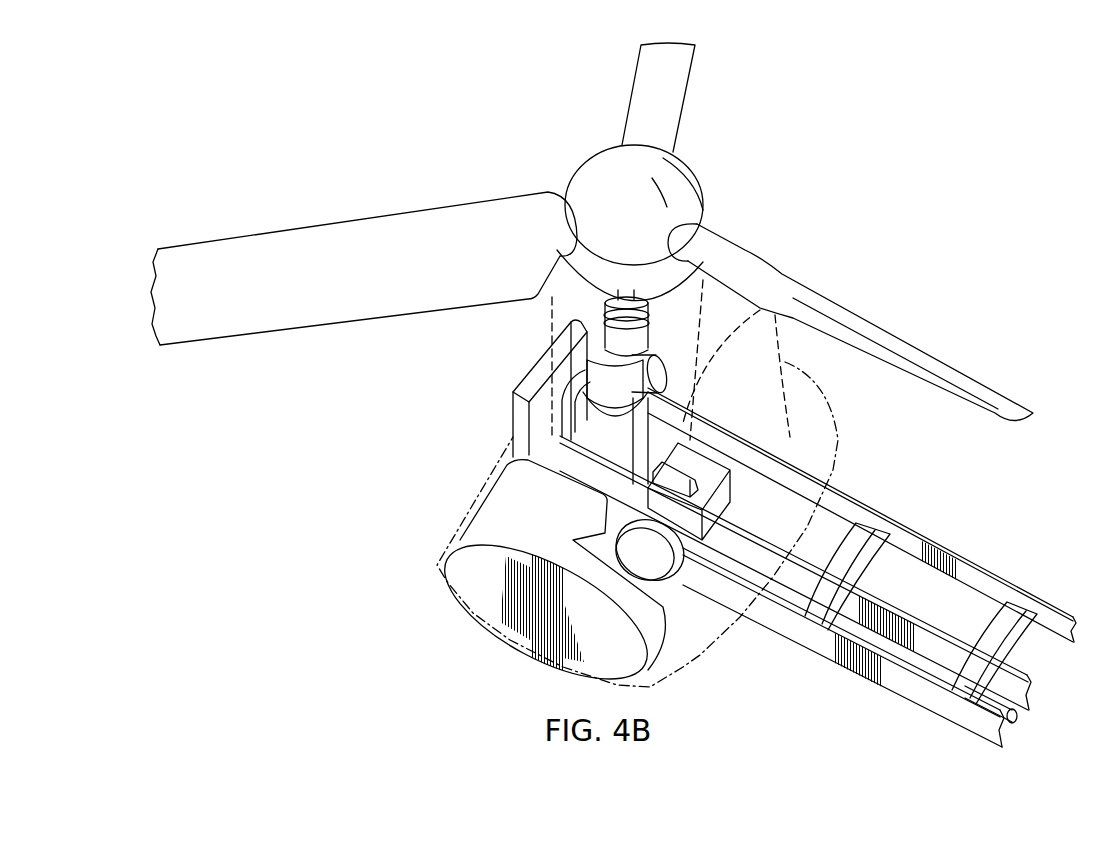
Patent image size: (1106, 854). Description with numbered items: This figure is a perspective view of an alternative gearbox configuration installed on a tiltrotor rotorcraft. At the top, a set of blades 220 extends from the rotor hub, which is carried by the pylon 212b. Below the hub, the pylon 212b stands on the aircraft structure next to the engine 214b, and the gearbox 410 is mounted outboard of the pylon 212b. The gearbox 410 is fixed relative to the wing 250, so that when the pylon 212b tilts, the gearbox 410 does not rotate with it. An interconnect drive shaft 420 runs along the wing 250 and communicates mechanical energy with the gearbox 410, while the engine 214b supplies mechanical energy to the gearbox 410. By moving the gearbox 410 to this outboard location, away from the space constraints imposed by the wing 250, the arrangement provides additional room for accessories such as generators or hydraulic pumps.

The blades 220 is at (628, 92).
The pylon 212b is at (552, 320).
The engine 214b is at (710, 468).
The gearbox 410 is at (517, 409).
The wing 250 is at (993, 577).
The interconnect drive shaft 420 is at (946, 679).